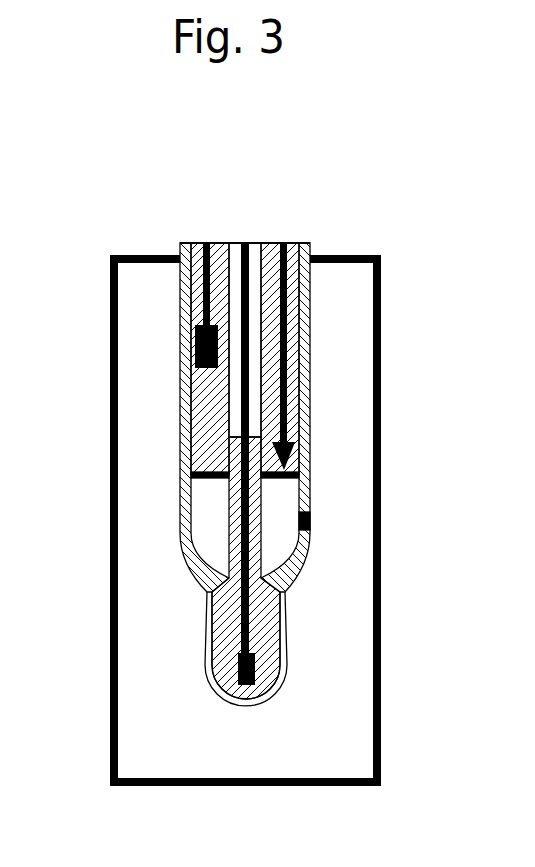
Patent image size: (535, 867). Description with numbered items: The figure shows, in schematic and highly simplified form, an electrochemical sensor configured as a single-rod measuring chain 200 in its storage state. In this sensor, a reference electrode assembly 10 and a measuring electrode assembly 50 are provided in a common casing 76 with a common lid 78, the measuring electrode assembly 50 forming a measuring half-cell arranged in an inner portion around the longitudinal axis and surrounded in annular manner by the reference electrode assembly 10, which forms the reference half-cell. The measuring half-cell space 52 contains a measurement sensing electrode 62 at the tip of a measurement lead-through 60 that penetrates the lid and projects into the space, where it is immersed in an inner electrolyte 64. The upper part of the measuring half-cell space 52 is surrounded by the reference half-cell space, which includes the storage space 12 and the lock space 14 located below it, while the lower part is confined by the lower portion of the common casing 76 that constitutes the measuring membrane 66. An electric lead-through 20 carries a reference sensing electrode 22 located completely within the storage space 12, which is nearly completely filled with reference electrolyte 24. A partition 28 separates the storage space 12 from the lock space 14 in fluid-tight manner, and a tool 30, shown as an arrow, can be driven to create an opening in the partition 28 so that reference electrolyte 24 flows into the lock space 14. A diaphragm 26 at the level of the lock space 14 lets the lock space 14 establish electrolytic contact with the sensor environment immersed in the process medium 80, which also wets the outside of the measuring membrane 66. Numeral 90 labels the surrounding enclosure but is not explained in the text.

The single-rod measuring chain 200 is at (377, 199).
The reference electrode assembly 10 is at (216, 240).
The storage space 12 is at (330, 262).
The lock space 14 is at (294, 560).
The electric lead-through 20 is at (190, 272).
The reference sensing electrode 22 is at (196, 338).
The reference electrolyte 24 is at (205, 437).
The diaphragm 26 is at (310, 522).
The partition 28 is at (297, 482).
The tool 30 is at (285, 353).
The measuring electrode assembly 50 is at (296, 626).
The measuring half-cell space 52 is at (258, 404).
The measurement lead-through 60 is at (256, 243).
The measurement sensing electrode 62 is at (238, 667).
The inner electrolyte 64 is at (227, 621).
The measuring membrane 66 is at (245, 707).
The common casing 76 is at (181, 528).
The common lid 78 is at (288, 283).
The process medium 80 is at (320, 762).
The chamber wall 90 is at (381, 745).